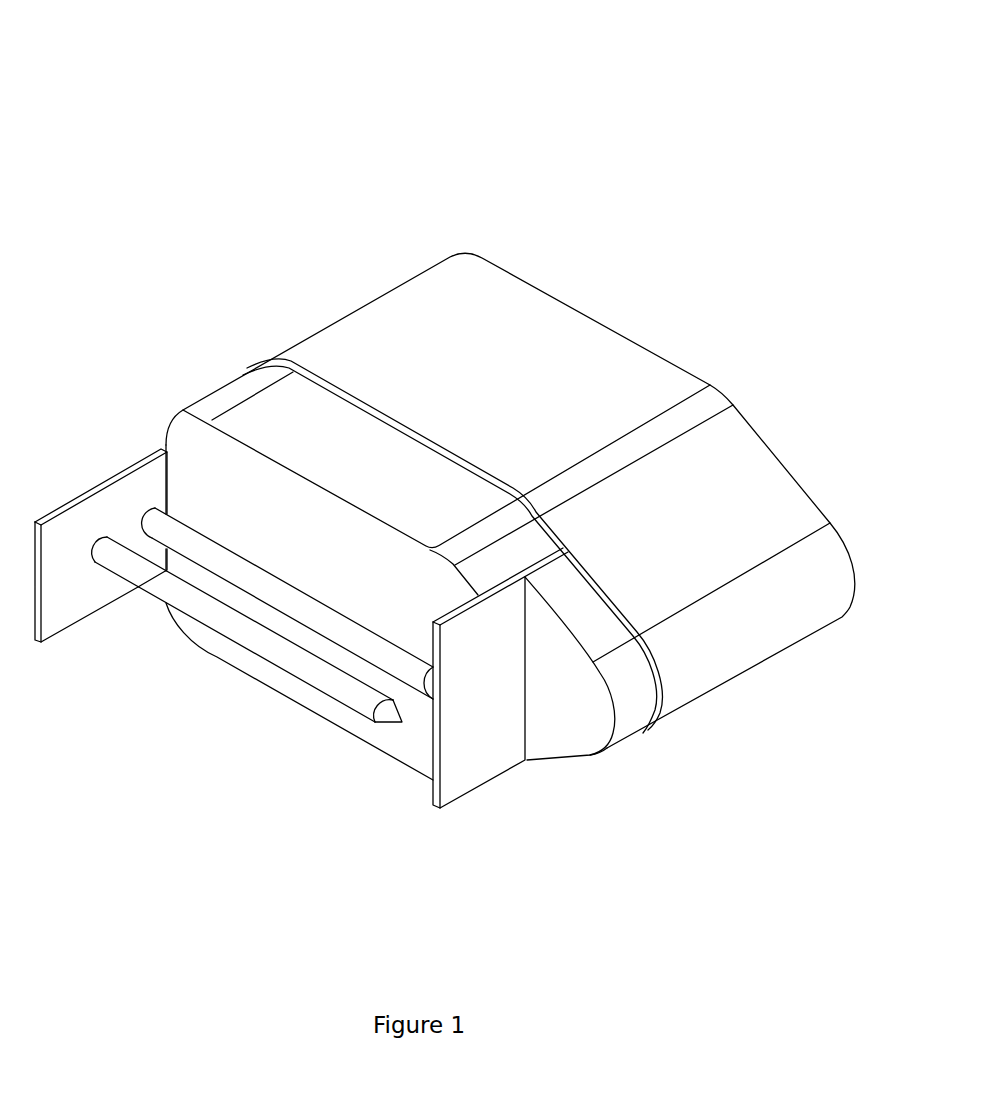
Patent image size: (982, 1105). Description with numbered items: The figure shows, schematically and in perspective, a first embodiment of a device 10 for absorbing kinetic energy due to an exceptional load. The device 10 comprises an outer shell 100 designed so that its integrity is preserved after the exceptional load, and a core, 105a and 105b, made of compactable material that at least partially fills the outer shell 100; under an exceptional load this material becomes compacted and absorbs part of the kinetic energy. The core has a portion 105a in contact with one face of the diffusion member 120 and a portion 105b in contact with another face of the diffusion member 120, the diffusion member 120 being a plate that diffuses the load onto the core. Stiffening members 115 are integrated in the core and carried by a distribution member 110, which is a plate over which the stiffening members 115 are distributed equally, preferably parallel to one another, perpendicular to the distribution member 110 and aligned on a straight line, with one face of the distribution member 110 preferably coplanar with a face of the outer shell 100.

The device 10 is at (201, 122).
The outer shell 100 is at (368, 328).
The core portion 105a is at (227, 400).
The core portion 105b is at (573, 732).
The distribution member 110 is at (100, 517).
The stiffening member 115 is at (155, 575).
The diffusion member 120 is at (475, 773).